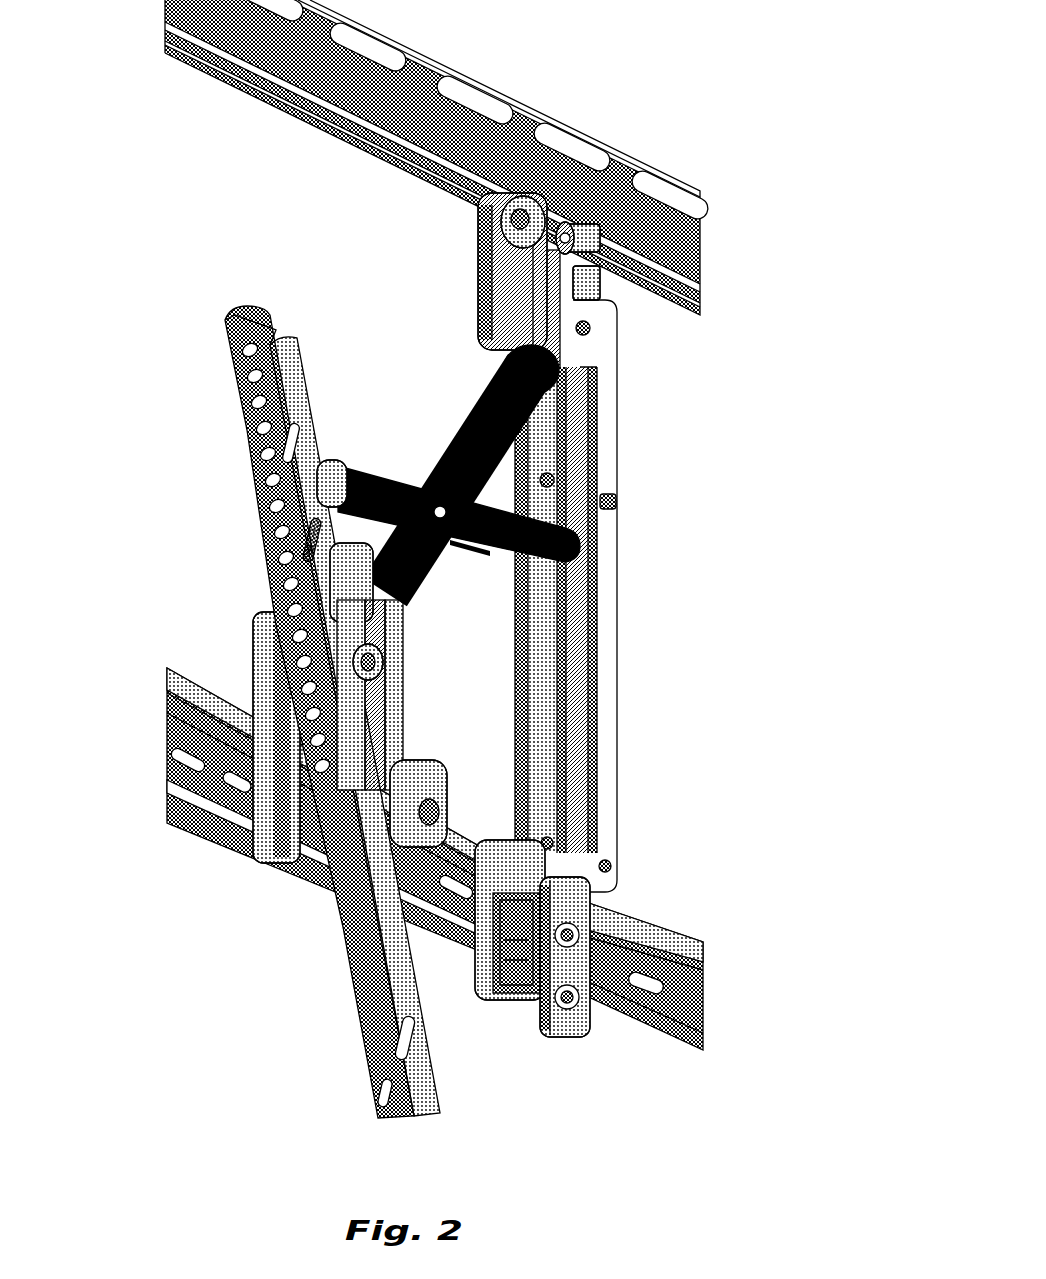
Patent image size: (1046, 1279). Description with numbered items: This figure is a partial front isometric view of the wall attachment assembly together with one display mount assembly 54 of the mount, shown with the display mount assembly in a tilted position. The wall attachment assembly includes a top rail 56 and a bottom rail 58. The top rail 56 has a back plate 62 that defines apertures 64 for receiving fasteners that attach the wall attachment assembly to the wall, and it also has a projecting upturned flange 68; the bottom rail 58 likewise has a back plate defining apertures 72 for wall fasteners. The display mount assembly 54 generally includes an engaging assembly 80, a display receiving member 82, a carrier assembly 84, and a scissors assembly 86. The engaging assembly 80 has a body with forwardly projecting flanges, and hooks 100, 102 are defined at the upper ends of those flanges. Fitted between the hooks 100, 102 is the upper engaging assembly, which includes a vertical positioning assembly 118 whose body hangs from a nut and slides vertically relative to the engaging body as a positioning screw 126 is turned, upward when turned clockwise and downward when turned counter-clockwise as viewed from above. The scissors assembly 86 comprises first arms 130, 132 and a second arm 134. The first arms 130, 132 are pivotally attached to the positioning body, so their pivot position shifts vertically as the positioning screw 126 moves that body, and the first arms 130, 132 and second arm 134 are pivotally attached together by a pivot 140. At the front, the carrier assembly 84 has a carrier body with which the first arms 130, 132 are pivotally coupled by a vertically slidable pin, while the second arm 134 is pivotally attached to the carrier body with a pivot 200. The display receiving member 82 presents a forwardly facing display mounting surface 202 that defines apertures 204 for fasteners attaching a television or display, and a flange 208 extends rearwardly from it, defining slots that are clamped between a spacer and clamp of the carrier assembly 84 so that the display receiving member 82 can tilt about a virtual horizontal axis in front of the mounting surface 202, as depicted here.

The display mount assembly 54 is at (603, 543).
The top rail 56 is at (600, 246).
The bottom rail 58 is at (182, 797).
The back plate 62 is at (418, 127).
The apertures 64 is at (663, 187).
The upturned flange 68 is at (227, 87).
The apertures 72 is at (673, 993).
The engaging assembly 80 is at (607, 430).
The display receiving member 82 is at (232, 362).
The carrier assembly 84 is at (250, 648).
The scissors assembly 86 is at (427, 467).
The hook 100 is at (500, 198).
The hook 102 is at (597, 227).
The vertical positioning assembly 118 is at (478, 282).
The positioning screw 126 is at (478, 226).
The first arm 130 is at (483, 400).
The first arm 132 is at (590, 393).
The second arm 134 is at (590, 503).
The pivot 140 is at (478, 547).
The pivot 200 is at (332, 457).
The display mounting surface 202 is at (250, 452).
The apertures 204 is at (270, 573).
The flange 208 is at (392, 735).